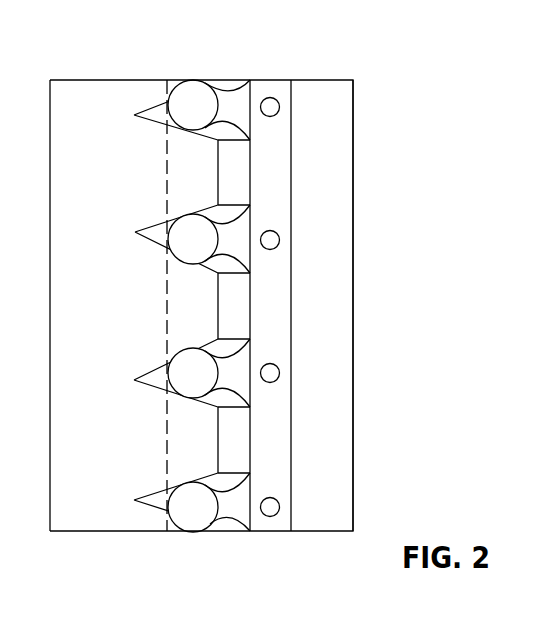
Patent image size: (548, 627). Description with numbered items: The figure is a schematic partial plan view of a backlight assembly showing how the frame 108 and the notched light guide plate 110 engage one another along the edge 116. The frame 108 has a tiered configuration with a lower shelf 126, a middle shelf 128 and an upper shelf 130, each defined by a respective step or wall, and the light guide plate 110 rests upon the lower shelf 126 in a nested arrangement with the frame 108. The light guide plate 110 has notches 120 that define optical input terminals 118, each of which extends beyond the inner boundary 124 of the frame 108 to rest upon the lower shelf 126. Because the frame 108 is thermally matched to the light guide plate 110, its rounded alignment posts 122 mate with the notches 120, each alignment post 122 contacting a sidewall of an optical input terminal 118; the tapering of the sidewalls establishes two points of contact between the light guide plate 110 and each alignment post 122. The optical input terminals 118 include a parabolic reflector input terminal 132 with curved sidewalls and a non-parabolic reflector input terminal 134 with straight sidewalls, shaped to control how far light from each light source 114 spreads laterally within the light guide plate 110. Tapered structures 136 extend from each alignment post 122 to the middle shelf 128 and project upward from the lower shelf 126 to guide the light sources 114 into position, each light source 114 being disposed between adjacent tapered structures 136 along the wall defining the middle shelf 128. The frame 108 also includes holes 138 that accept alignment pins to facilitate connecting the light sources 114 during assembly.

The frame 108 is at (319, 80).
The light guide plate 110 is at (108, 80).
The light source 114 is at (250, 183).
The edge 116 is at (168, 75).
The optical input terminal 118 is at (220, 304).
The notch 120 is at (231, 214).
The alignment post 122 is at (194, 86).
The inner boundary 124 is at (167, 425).
The lower shelf 126 is at (227, 528).
The middle shelf 128 is at (272, 528).
The upper shelf 130 is at (321, 528).
The parabolic reflector input terminal 132 is at (209, 316).
The non-parabolic reflector input terminal 134 is at (210, 183).
The tapered structure 136 is at (279, 103).
The hole 138 is at (281, 242).